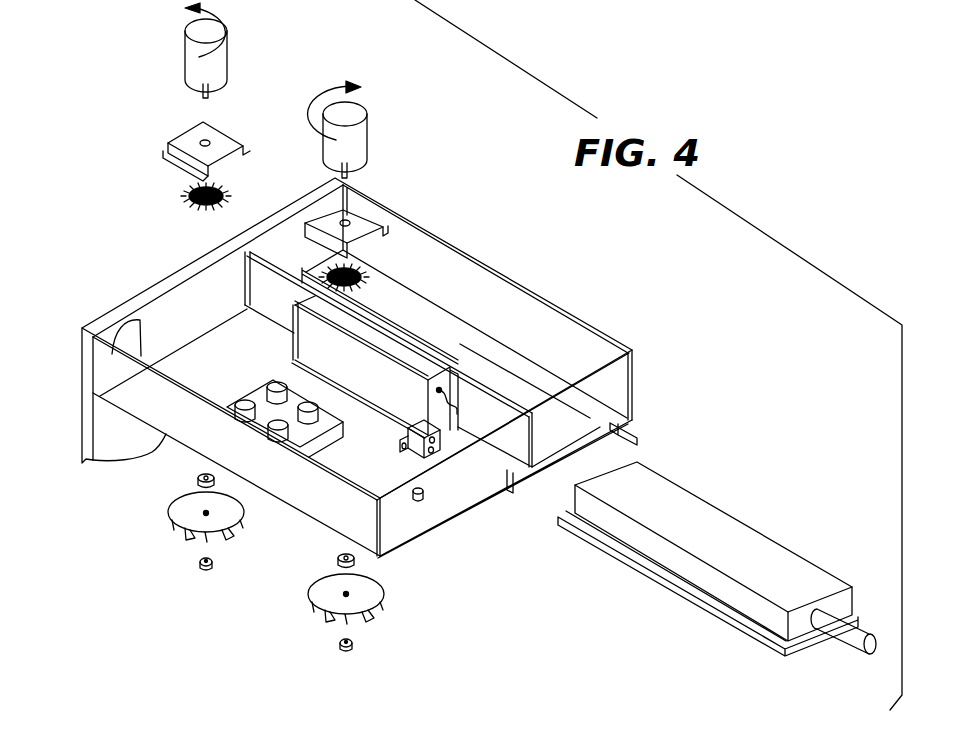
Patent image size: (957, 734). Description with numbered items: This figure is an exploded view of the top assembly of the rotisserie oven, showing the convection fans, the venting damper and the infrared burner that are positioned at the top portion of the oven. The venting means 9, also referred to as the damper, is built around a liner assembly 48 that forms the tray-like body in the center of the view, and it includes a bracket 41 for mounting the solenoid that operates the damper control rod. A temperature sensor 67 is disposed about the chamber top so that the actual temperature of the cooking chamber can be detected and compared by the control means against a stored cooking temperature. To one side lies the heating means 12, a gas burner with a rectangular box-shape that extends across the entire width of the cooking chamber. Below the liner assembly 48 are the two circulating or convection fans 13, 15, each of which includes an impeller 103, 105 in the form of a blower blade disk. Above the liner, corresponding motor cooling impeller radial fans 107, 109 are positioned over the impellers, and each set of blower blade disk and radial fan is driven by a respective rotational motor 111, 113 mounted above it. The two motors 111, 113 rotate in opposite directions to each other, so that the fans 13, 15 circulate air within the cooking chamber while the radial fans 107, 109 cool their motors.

The venting means 9 is at (414, 349).
The heating means 12 is at (780, 557).
The convection fan 13 is at (156, 511).
The convection fan 15 is at (388, 617).
The bracket 41 is at (443, 456).
The liner assembly 48 is at (455, 522).
The temperature sensor 67 is at (418, 503).
The impeller 103 is at (187, 545).
The impeller 105 is at (307, 595).
The motor cooling impeller radial fan 107 is at (186, 198).
The motor cooling impeller radial fan 109 is at (366, 276).
The rotational motor 111 is at (185, 66).
The rotational motor 113 is at (367, 122).